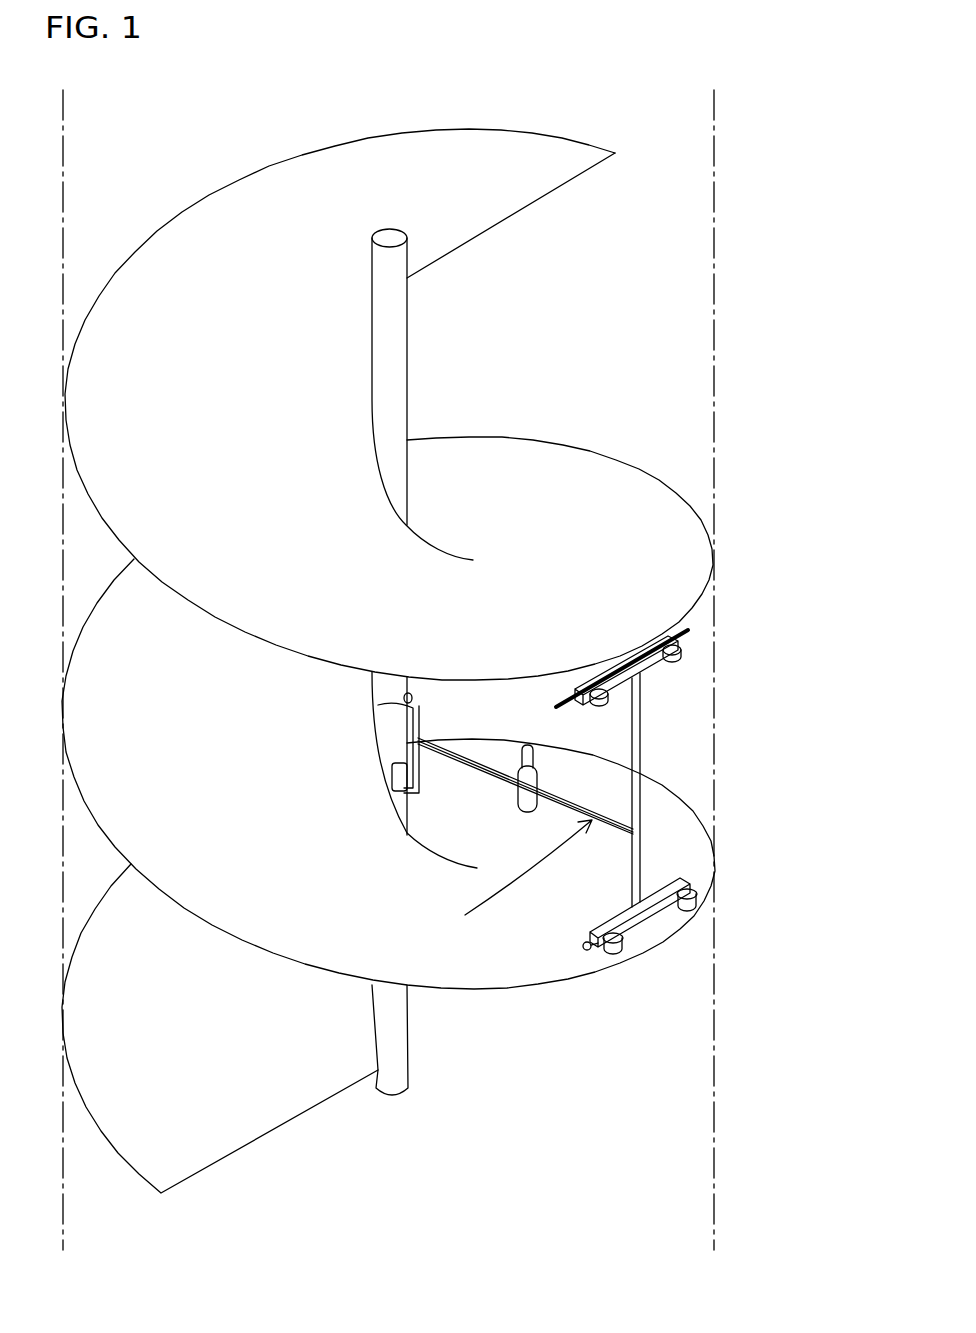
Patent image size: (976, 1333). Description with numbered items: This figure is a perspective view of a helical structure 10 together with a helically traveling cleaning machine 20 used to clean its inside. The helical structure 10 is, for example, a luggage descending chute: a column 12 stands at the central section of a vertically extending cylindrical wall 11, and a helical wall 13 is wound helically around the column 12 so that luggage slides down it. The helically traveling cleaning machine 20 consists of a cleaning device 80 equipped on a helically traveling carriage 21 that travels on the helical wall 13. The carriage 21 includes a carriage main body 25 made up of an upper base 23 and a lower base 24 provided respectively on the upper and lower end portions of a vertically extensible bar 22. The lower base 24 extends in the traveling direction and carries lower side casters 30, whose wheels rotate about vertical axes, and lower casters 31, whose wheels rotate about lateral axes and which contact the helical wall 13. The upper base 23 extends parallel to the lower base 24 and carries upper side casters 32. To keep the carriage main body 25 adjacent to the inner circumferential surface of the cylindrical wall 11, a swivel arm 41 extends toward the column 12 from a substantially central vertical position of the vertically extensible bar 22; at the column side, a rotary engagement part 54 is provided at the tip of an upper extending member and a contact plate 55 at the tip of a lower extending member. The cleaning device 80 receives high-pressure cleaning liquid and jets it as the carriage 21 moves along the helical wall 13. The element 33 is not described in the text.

The helical structure 10 is at (738, 139).
The cylindrical wall 11 is at (715, 216).
The column 12 is at (390, 322).
The helical wall 13 is at (600, 488).
The helically traveling cleaning machine 20 is at (483, 844).
The helically traveling carriage 21 is at (510, 876).
The vertically extensible bar 22 is at (635, 733).
The upper base 23 is at (645, 668).
The lower base 24 is at (663, 885).
The carriage main body 25 is at (691, 791).
The lower side casters 30 is at (622, 952).
The lower casters 31 is at (612, 958).
The upper side casters 32 is at (597, 690).
The blade edge plate 33 is at (688, 628).
The swivel arm 41 is at (473, 758).
The rotary engagement part 54 is at (378, 705).
The contact plate 55 is at (392, 768).
The cleaning device 80 is at (524, 803).